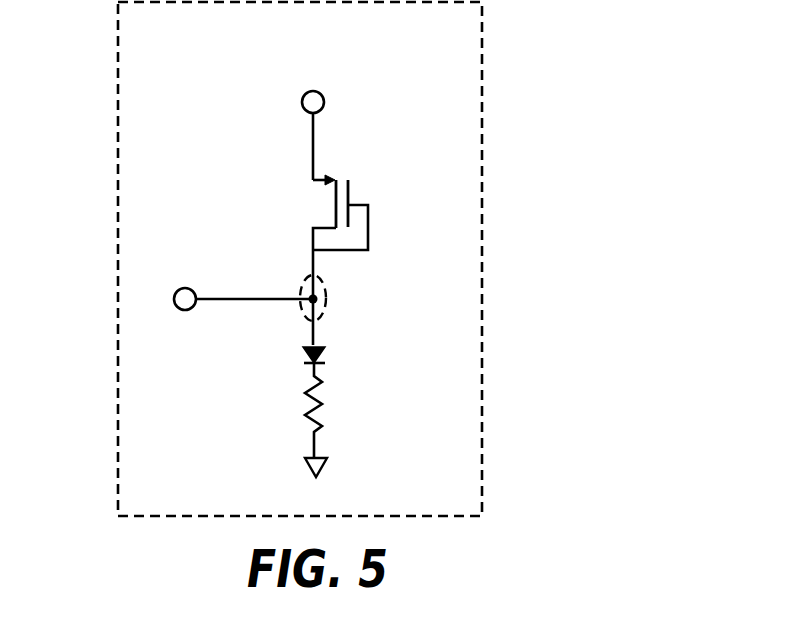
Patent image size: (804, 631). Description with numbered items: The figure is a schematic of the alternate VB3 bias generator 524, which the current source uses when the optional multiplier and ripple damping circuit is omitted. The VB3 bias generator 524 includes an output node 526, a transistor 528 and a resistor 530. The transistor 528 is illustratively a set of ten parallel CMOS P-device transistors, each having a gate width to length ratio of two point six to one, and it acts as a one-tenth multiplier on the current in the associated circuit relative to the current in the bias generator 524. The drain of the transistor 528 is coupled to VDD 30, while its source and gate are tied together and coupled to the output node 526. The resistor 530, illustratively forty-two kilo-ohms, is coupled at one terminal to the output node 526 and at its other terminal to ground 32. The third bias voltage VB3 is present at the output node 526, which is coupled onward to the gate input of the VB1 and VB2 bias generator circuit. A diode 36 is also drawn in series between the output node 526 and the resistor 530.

The VB3 bias generator 524 is at (117, 295).
The VDD 30 is at (325, 98).
The transistor 528 is at (352, 191).
The output node 526 is at (298, 320).
The diode 36 is at (326, 350).
The resistor 530 is at (325, 432).
The ground 32 is at (305, 468).